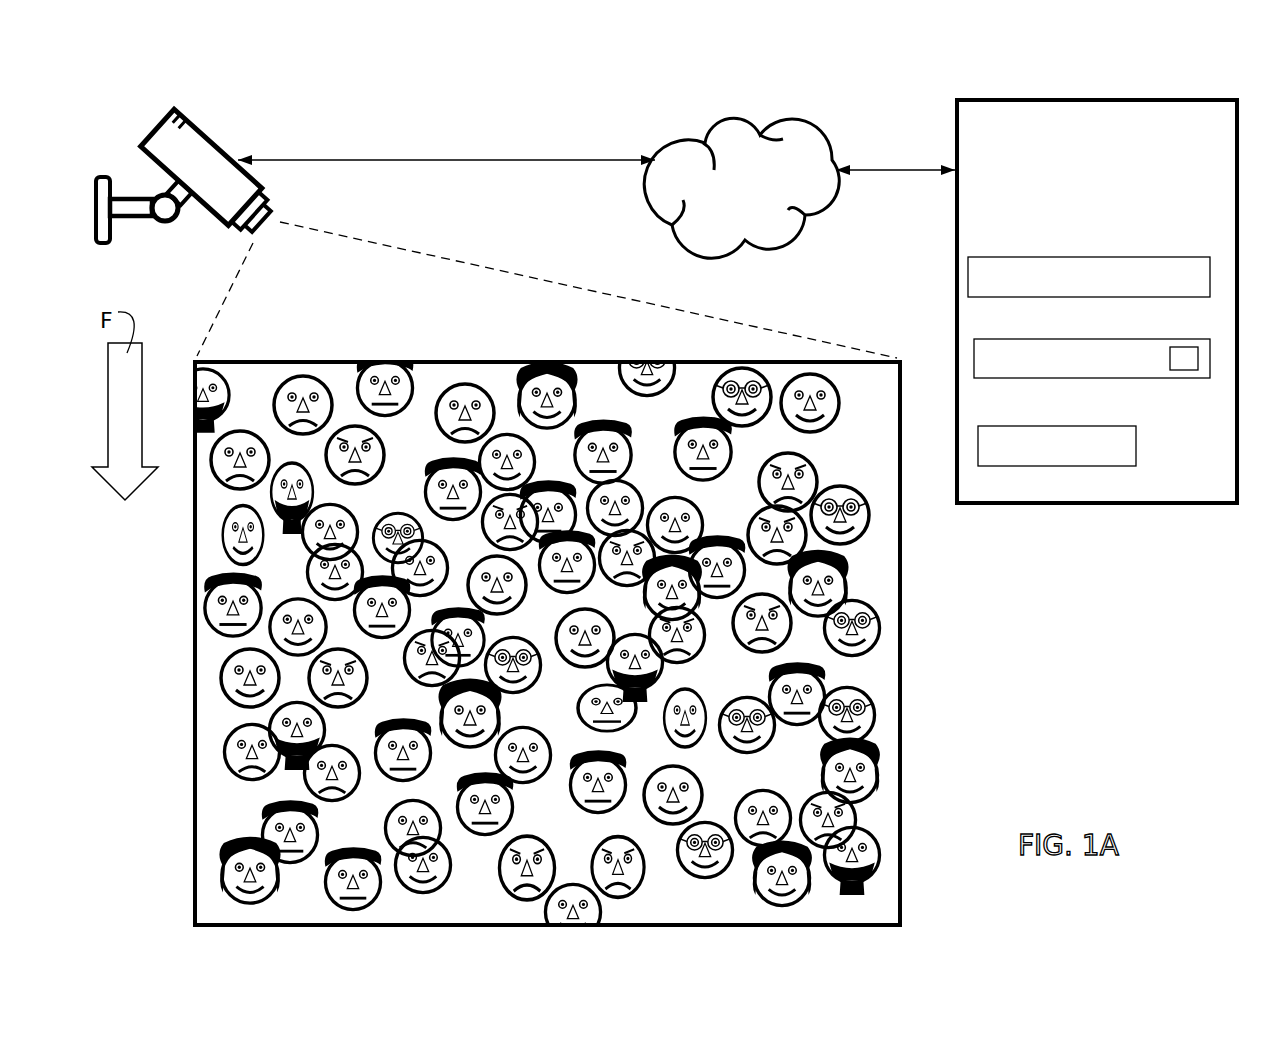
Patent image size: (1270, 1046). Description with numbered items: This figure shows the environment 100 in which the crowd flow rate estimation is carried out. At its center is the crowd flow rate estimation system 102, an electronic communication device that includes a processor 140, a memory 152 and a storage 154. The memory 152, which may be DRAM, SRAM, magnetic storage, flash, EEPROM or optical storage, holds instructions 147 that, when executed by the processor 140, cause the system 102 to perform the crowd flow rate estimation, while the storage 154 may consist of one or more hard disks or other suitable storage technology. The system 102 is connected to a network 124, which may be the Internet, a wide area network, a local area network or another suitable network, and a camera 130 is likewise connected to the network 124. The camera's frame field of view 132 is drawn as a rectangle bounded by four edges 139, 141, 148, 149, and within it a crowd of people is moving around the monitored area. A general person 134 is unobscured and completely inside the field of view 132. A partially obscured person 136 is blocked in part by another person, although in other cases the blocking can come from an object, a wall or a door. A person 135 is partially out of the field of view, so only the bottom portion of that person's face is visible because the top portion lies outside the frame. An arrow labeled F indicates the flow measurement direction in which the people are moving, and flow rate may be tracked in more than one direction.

The crowd flow rate estimation system 100 is at (1048, 78).
The crowd flow rate estimation system 102 is at (1003, 108).
The network 124 is at (730, 143).
The camera 130 is at (196, 133).
The frame field of view 132 is at (425, 352).
The general person 134 is at (816, 432).
The person partially out of the field of view 135 is at (657, 385).
The partially obscured person 136 is at (334, 503).
The edge 139 is at (903, 590).
The processor 140 is at (1077, 256).
The edge 141 is at (340, 360).
The instructions 147 is at (1178, 354).
The edge 148 is at (678, 927).
The edge 149 is at (194, 740).
The memory 152 is at (1103, 341).
The storage 154 is at (1109, 425).